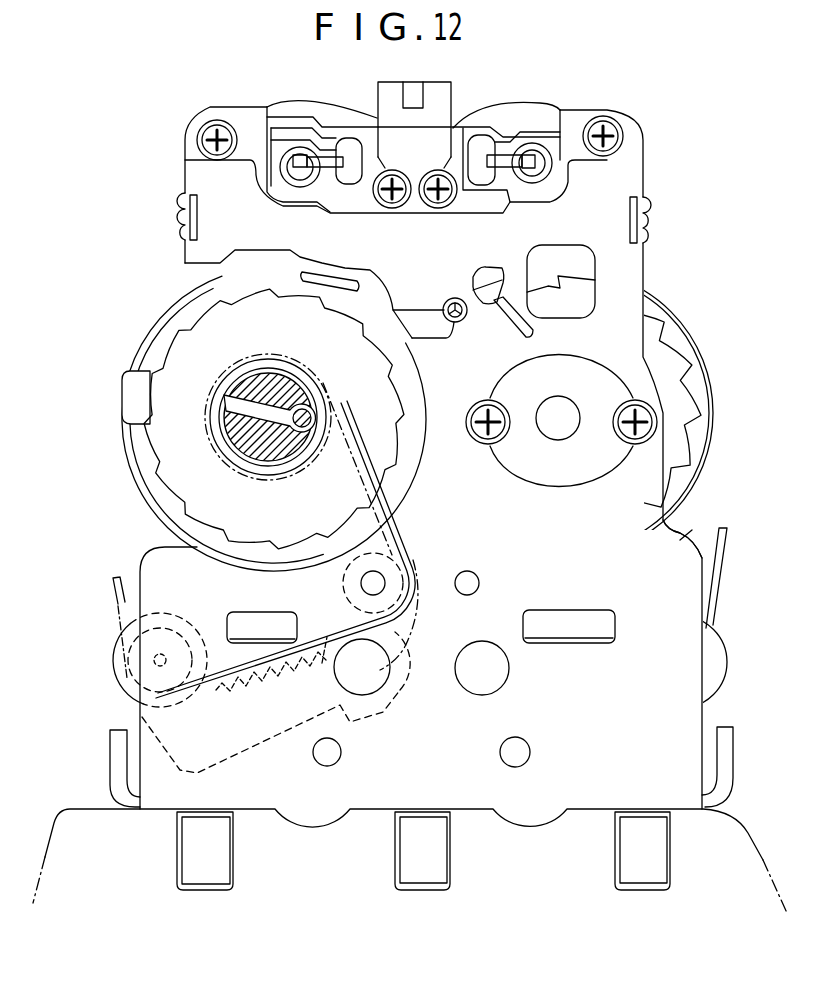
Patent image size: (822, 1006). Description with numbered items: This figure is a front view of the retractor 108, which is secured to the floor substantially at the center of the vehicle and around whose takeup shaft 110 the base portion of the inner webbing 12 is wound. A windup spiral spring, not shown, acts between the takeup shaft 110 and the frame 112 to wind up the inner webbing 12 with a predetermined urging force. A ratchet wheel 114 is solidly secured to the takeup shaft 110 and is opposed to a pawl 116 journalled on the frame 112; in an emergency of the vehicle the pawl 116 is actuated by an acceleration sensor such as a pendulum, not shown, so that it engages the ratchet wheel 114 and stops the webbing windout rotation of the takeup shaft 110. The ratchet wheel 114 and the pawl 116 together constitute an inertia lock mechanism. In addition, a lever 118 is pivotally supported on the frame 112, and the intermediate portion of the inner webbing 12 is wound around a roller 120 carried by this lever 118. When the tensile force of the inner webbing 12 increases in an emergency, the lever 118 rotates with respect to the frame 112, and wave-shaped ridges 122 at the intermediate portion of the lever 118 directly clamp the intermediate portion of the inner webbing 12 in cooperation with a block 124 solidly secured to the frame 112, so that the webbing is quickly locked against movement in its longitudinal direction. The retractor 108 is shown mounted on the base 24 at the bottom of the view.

The retractor 108 is at (651, 147).
The takeup shaft 110 is at (280, 457).
The frame 112 is at (687, 548).
The ratchet wheel 114 is at (173, 487).
The pawl 116 is at (357, 280).
The lever 118 is at (128, 698).
The roller 120 is at (132, 667).
The wave-shaped ridges 122 is at (232, 712).
The block 124 is at (228, 645).
The inner webbing 12 is at (115, 618).
The base housing 24 is at (92, 816).